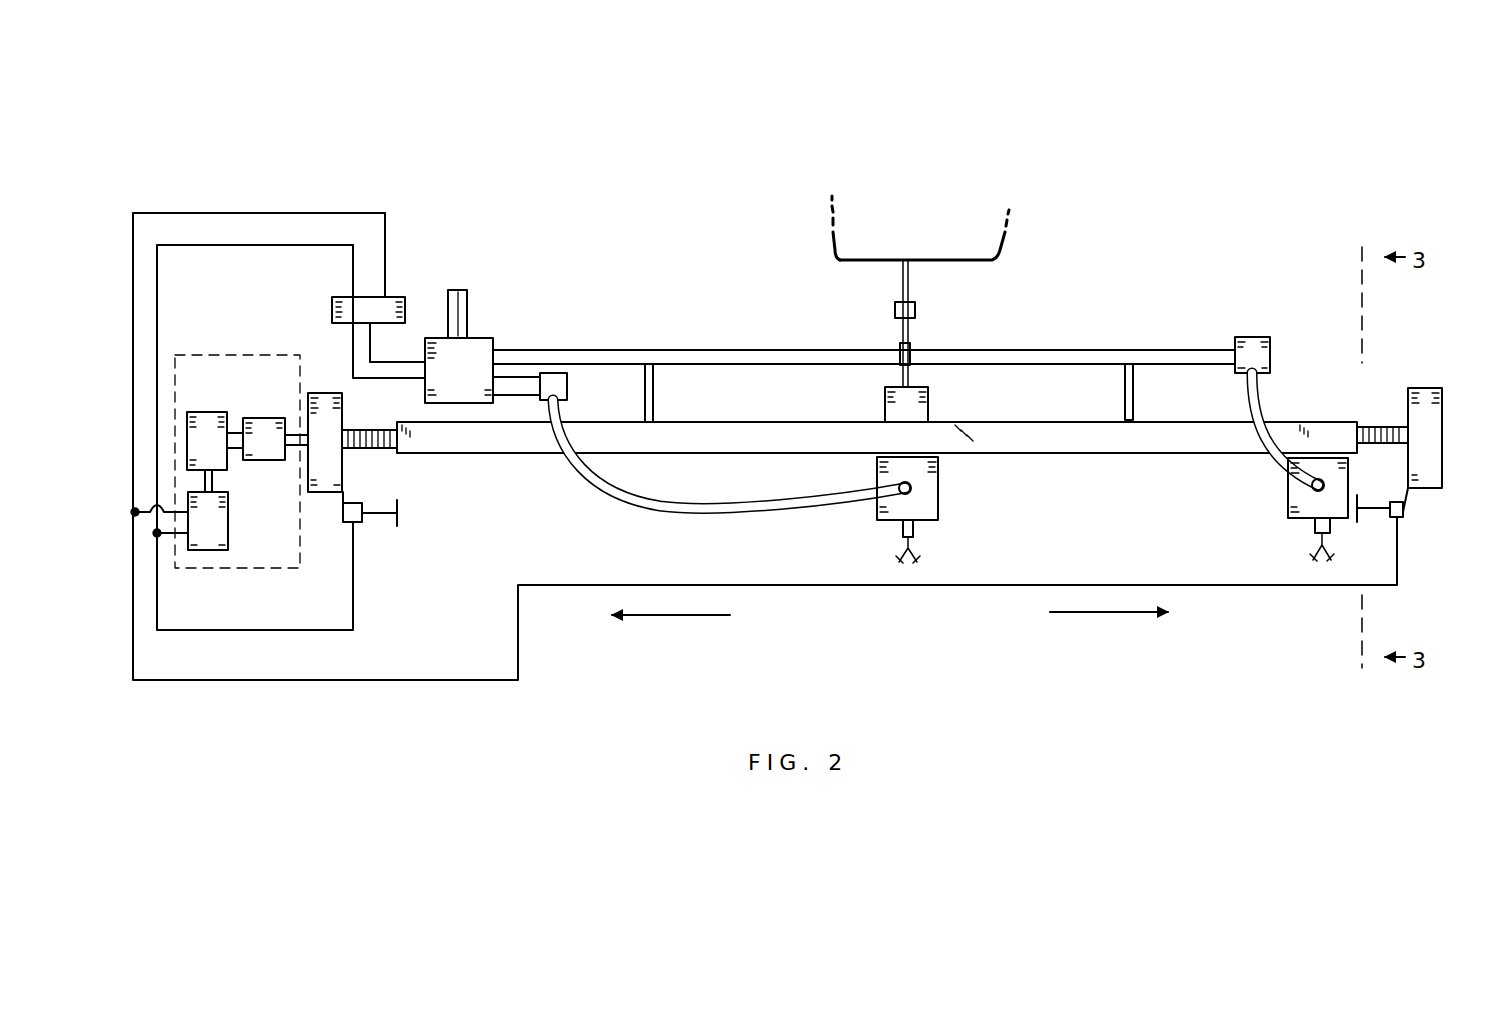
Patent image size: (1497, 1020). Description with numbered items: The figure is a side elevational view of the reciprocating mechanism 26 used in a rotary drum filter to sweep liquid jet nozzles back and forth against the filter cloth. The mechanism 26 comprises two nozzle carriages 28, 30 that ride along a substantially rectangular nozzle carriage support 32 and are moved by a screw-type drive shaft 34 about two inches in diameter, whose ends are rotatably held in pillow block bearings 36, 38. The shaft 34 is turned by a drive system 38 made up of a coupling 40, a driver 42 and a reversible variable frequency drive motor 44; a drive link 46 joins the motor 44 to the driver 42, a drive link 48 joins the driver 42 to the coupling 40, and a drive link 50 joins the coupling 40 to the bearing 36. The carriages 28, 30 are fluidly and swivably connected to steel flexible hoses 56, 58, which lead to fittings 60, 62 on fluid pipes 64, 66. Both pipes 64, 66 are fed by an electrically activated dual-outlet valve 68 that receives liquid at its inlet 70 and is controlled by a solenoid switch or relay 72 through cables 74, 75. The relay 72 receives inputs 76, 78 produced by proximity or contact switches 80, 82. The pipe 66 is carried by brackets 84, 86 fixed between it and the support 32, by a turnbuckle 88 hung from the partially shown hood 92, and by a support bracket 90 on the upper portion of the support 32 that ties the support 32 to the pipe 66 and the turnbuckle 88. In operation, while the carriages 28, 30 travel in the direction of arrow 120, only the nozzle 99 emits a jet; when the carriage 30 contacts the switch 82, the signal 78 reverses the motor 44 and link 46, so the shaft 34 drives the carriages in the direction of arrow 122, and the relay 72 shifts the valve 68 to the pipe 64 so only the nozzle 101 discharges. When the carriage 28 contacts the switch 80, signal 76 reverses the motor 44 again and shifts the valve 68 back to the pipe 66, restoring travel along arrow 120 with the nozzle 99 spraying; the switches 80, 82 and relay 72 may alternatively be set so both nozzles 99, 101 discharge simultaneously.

The reciprocating mechanism 26 is at (720, 300).
The nozzle carriage 28 is at (940, 483).
The nozzle carriage 30 is at (1290, 495).
The nozzle carriage support 32 is at (1090, 455).
The screw-type drive shaft 34 is at (378, 450).
The pillow block bearing 36 is at (325, 393).
The drive system 38 is at (255, 568).
The coupling 40 is at (270, 418).
The driver 42 is at (205, 412).
The variable frequency drive motor 44 is at (230, 525).
The drive link 46 is at (214, 482).
The drive link 48 is at (233, 433).
The drive link 50 is at (297, 447).
The flexible hose 56 is at (705, 510).
The flexible hose 58 is at (1262, 420).
The fitting 60 is at (568, 387).
The fitting 62 is at (1252, 337).
The fluid pipe 64 is at (520, 397).
The fluid pipe 66 is at (645, 350).
The electrically activated dual-outlet valve 68 is at (470, 358).
The inlet 70 is at (470, 310).
The solenoid switch or relay 72 is at (398, 303).
The cable 74 is at (373, 346).
The cable 75 is at (400, 380).
The input 76 is at (240, 247).
The input 78 is at (258, 213).
The proximity or contact switch 80 is at (364, 522).
The proximity or contact switch 82 is at (1403, 517).
The bracket 84 is at (655, 395).
The bracket 86 is at (1135, 395).
The turnbuckle 88 is at (910, 333).
The support bracket 90 is at (928, 398).
The hood 92 is at (975, 262).
The nozzle 99 is at (1315, 556).
The nozzle 101 is at (920, 560).
The arrow 120 is at (1135, 612).
The arrow 122 is at (670, 615).